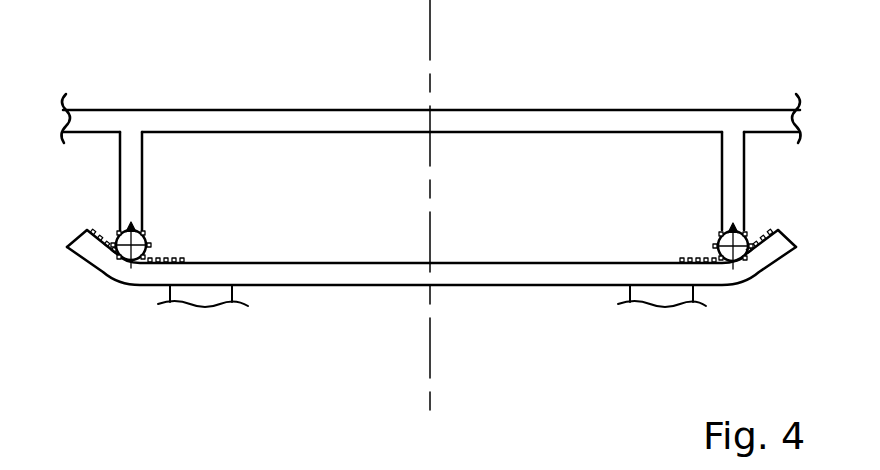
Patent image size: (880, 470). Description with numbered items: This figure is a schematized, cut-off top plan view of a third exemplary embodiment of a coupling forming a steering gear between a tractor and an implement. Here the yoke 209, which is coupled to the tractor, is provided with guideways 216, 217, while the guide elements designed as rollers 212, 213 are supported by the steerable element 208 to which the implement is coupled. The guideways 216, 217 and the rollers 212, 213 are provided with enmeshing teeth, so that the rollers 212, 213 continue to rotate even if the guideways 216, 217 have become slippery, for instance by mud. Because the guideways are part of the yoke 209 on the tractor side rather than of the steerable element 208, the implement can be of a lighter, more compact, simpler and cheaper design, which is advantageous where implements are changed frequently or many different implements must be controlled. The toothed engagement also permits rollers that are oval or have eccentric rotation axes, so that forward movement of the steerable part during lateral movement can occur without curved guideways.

The steerable element 208 is at (521, 108).
The yoke 209 is at (496, 286).
The guide element (roller) 212 is at (150, 240).
The guide element (roller) 213 is at (715, 242).
The guideway 216 is at (108, 225).
The guideway 217 is at (756, 226).